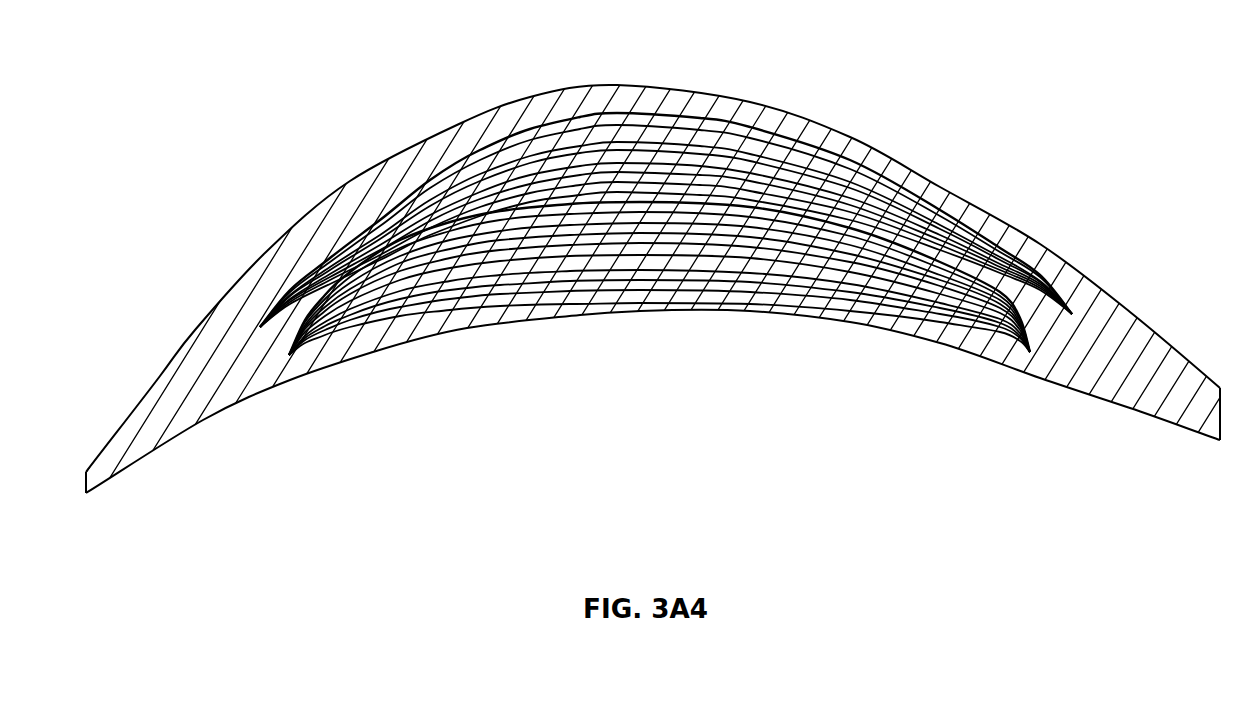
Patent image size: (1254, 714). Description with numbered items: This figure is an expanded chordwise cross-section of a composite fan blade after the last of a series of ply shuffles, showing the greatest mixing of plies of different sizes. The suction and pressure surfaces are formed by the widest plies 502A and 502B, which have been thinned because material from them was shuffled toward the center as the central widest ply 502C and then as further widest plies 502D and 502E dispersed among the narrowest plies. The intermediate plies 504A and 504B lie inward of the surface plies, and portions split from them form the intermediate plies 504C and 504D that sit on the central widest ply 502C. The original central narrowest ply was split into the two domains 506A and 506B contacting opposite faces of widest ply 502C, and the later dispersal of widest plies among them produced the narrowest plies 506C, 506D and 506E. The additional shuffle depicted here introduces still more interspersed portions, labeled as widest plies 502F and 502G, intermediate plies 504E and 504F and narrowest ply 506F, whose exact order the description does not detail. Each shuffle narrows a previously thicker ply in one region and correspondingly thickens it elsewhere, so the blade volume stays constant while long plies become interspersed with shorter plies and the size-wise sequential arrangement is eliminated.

The widest ply 502A is at (992, 216).
The widest ply 502B is at (1065, 374).
The widest ply 502C is at (878, 255).
The widest ply 502D is at (833, 198).
The widest ply 502E is at (852, 333).
The lens layer 502F is at (753, 203).
The lens layer 502G is at (742, 290).
The intermediate ply 504A is at (707, 113).
The intermediate ply 504B is at (916, 343).
The intermediate ply 504C is at (643, 193).
The intermediate ply 504D is at (643, 190).
The optical element layer 504E is at (727, 183).
The optical element layer 504F is at (390, 283).
The narrowest ply 506A is at (540, 140).
The narrowest ply 506B is at (463, 283).
The narrowest ply 506C is at (497, 177).
The narrowest ply 506D is at (318, 292).
The narrowest ply 506E is at (433, 165).
The optical element layer 506F is at (663, 243).